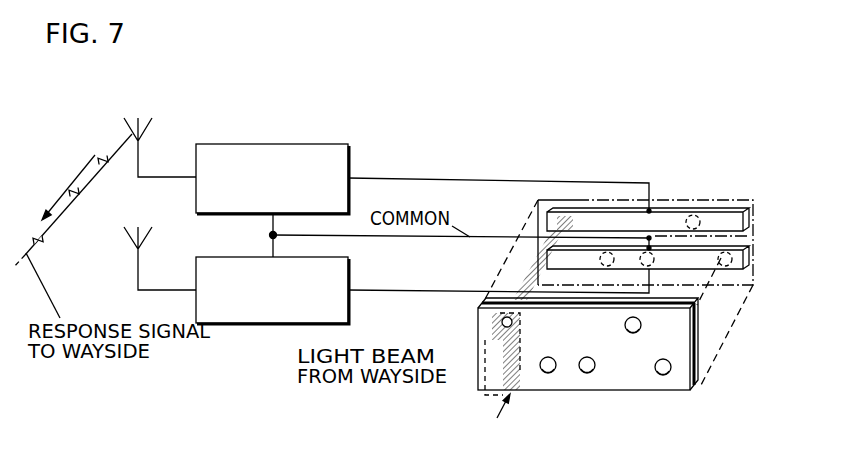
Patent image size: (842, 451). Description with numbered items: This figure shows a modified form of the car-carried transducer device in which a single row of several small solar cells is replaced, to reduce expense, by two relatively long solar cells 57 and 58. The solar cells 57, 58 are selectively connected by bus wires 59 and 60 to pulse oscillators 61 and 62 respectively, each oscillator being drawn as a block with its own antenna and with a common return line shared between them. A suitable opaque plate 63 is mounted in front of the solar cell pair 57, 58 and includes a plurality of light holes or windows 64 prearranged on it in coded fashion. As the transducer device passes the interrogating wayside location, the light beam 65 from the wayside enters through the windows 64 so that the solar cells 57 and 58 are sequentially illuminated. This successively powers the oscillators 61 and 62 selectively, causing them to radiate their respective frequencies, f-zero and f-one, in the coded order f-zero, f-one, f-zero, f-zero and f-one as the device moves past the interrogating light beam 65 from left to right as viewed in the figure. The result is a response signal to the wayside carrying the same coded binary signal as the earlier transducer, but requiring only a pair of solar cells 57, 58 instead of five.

The solar cell 57 is at (733, 240).
The solar cell 58 is at (750, 257).
The bus wire 59 is at (534, 182).
The bus wire 60 is at (482, 292).
The pulse oscillator 61 is at (350, 207).
The pulse oscillator 62 is at (350, 308).
The opaque plate 63 is at (698, 373).
The light holes or windows 64 is at (656, 365).
The light beam 65 is at (492, 364).